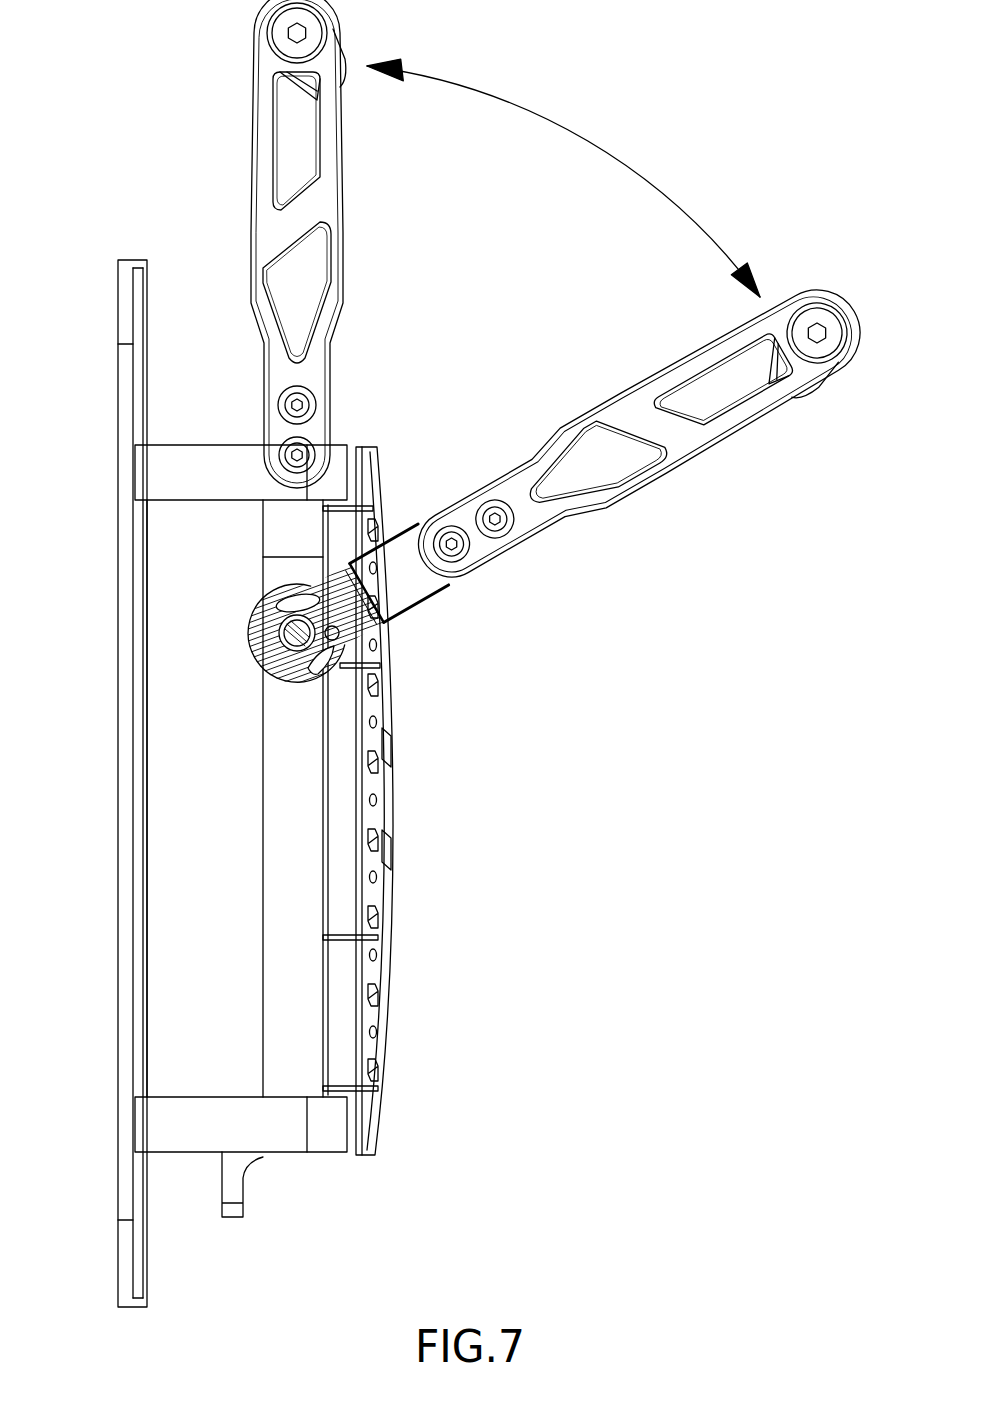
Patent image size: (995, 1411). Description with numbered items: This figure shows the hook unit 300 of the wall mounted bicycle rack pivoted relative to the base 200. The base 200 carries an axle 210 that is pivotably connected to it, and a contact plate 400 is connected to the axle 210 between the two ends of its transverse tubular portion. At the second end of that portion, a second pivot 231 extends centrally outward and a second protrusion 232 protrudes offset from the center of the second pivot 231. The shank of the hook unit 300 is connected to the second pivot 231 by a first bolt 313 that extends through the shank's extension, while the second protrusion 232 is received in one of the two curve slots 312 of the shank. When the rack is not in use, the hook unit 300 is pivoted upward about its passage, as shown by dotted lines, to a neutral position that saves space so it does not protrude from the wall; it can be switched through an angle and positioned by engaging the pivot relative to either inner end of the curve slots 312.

The base 200 is at (104, 838).
The axle 210 is at (282, 873).
The second pivot 231 is at (275, 628).
The second protrusion 232 is at (360, 620).
The hook unit 300 is at (220, 126).
The curve slots 312 is at (313, 666).
The first bolt 313 is at (277, 650).
The contact plate 400 is at (408, 966).